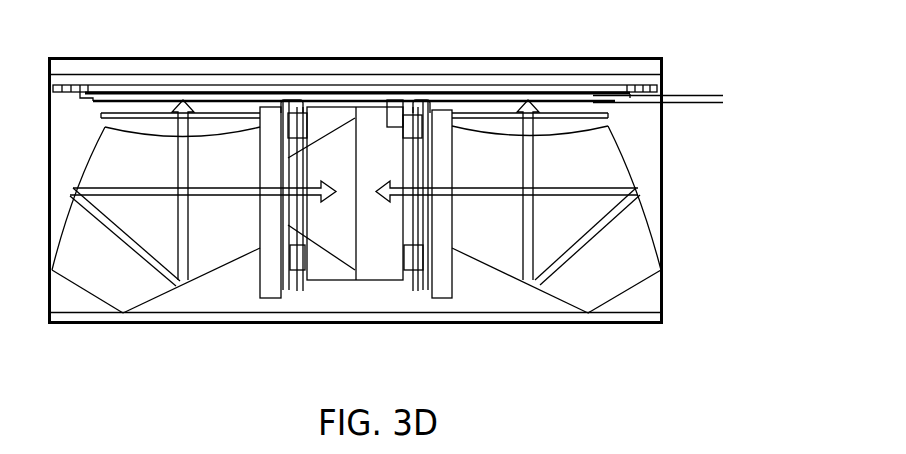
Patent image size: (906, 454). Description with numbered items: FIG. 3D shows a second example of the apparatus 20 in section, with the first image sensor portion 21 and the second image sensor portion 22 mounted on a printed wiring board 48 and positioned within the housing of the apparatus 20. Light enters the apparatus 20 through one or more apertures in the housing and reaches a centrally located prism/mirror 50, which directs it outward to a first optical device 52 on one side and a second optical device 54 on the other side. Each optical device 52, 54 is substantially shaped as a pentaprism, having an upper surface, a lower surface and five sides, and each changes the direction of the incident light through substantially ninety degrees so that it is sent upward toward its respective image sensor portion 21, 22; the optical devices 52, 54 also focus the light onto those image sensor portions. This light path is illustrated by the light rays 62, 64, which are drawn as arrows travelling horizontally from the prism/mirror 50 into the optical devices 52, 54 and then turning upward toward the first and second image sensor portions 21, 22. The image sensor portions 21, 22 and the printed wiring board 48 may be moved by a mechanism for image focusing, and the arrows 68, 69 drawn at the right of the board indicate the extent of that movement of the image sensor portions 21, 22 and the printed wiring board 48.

The apparatus 20 is at (725, 325).
The first image sensor portion 21 is at (542, 88).
The second image sensor portion 22 is at (175, 90).
The printed wiring board 48 is at (493, 85).
The prism/mirror 50 is at (365, 275).
The first optical device 52 is at (137, 273).
The second optical device 54 is at (558, 305).
The light ray 62 is at (197, 292).
The light ray 64 is at (635, 242).
The arrow 68 is at (713, 95).
The arrow 69 is at (713, 103).